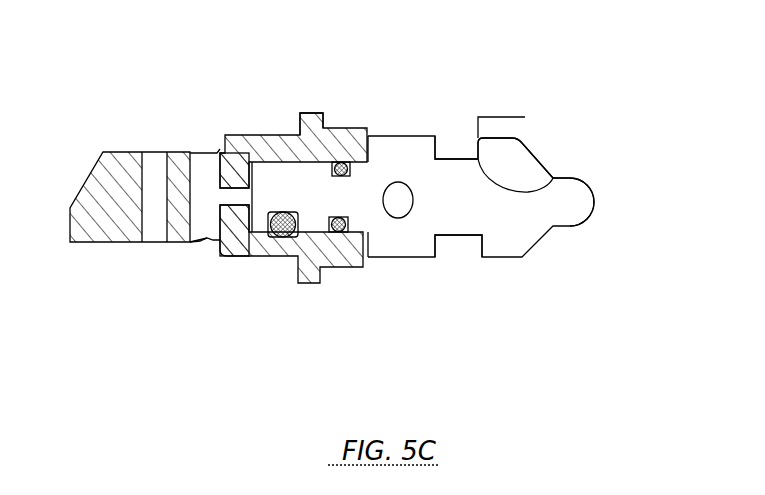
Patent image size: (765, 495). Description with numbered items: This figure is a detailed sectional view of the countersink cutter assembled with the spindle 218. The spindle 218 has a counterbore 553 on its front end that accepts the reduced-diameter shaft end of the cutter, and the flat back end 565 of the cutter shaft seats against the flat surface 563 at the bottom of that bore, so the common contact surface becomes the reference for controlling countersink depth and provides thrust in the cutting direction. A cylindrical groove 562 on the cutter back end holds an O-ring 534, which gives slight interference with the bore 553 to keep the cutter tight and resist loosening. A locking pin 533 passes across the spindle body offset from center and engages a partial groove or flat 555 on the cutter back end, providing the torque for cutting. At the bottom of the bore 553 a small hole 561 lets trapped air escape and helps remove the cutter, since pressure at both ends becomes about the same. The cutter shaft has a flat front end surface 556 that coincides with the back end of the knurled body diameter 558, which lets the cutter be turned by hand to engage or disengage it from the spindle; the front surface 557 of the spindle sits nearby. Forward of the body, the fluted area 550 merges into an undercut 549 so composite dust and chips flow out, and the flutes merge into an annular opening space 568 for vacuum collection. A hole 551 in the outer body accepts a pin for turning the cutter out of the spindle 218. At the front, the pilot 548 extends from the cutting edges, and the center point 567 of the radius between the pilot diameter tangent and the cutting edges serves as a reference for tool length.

The spindle 218 is at (120, 152).
The counterbore 553 is at (253, 162).
The small hole 561 is at (220, 153).
The flat surface 563 is at (227, 256).
The front surface 557 is at (368, 134).
The cutter shaft back end 565 is at (262, 160).
The locking pin 533 is at (280, 238).
The O-ring 534 is at (338, 233).
The cylindrical groove 562 is at (350, 215).
The partial groove or flat 555 is at (207, 240).
The front end surface 556 is at (381, 257).
The knurled body diameter 558 is at (455, 148).
The fluted area 550 is at (525, 160).
The circular annular opening space 568 is at (525, 117).
The center point 567 is at (558, 164).
The pilot 548 is at (570, 226).
The undercut 549 is at (457, 235).
The hole 551 is at (398, 218).